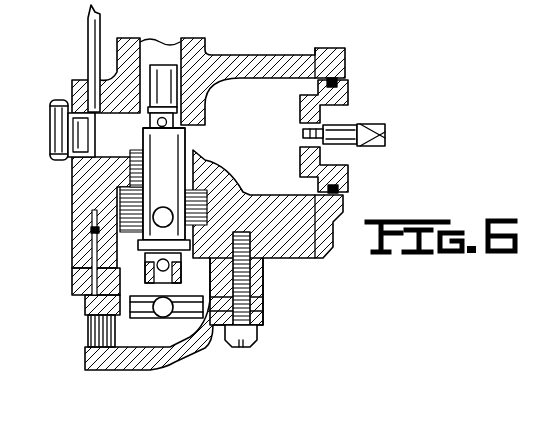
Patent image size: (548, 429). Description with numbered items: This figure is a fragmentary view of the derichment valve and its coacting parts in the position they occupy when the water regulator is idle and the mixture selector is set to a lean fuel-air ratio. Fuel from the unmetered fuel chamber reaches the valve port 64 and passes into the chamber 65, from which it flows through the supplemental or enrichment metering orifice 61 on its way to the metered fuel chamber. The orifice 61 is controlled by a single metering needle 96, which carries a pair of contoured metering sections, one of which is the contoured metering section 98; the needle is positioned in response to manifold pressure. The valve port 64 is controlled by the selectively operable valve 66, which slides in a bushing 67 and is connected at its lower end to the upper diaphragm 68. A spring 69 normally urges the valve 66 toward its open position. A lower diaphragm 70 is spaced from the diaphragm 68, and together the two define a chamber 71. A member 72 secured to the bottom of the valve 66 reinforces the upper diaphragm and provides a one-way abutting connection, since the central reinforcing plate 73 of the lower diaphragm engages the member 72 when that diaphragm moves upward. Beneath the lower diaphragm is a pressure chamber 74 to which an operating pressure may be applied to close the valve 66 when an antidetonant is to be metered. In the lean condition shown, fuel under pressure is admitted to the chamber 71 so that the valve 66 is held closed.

The chamber 65 is at (238, 88).
The valve port 64 is at (150, 112).
The valve 66 is at (182, 135).
The supplemental enrichment metering orifice 61 is at (302, 126).
The contoured metering section 98 is at (322, 124).
The metering needle 96 is at (378, 124).
The bushing 67 is at (140, 170).
The spring 69 is at (115, 196).
The diaphragm 68 is at (110, 234).
The diaphragm 70 is at (72, 285).
The chamber 71 is at (200, 278).
The central reinforcing plate 73 is at (205, 298).
The member 72 is at (158, 283).
The pressure chamber 74 is at (170, 340).